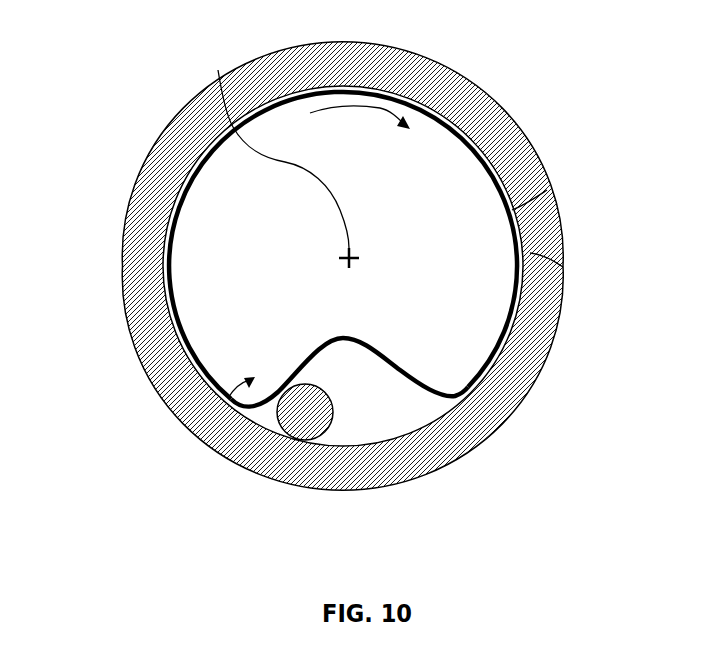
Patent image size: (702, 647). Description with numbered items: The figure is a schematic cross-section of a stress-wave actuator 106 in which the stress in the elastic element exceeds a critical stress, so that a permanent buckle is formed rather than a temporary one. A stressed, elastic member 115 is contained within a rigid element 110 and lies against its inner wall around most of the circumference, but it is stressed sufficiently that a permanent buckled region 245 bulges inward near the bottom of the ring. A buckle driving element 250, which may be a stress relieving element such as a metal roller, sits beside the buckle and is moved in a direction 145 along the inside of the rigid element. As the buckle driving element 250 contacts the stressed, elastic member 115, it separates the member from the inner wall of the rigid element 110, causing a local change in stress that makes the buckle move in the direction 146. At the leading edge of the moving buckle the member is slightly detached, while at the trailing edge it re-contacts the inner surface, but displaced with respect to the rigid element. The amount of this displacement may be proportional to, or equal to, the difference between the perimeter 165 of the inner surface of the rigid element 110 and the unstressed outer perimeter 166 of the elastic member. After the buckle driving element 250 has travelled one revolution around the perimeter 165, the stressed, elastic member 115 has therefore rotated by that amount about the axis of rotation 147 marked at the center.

The stress-wave actuator 106 is at (366, 563).
The rigid element 110 is at (522, 125).
The stressed, elastic member 115 is at (158, 250).
The direction 145 is at (223, 402).
The direction 146 is at (388, 108).
The axis of rotation 147 is at (276, 155).
The perimeter 165 is at (563, 267).
The outer perimeter 166 is at (547, 190).
The buckled region 245 is at (383, 357).
The buckle driving element 250 is at (288, 439).